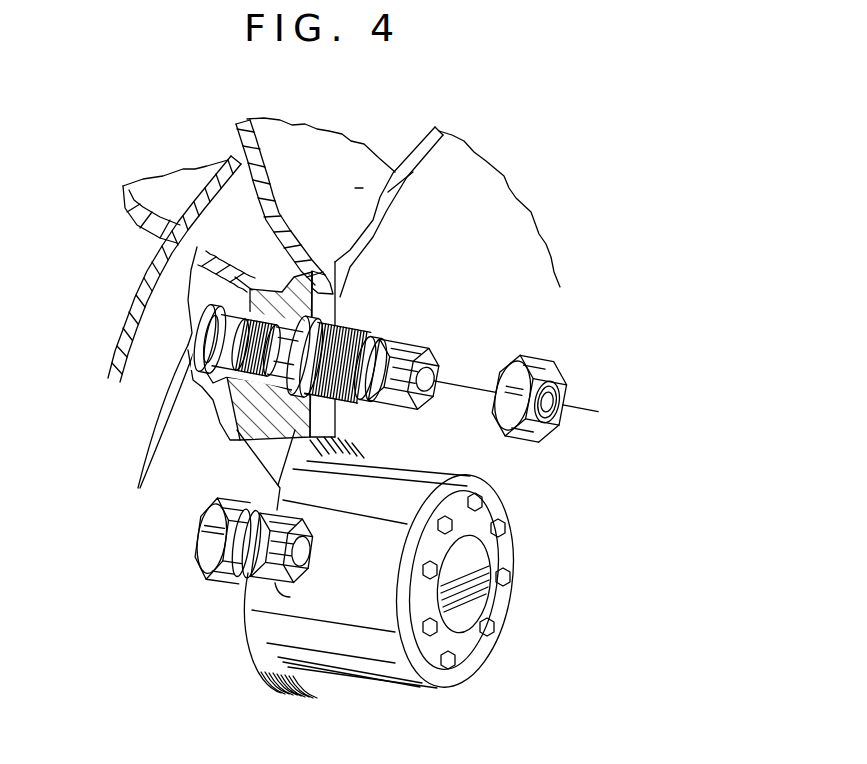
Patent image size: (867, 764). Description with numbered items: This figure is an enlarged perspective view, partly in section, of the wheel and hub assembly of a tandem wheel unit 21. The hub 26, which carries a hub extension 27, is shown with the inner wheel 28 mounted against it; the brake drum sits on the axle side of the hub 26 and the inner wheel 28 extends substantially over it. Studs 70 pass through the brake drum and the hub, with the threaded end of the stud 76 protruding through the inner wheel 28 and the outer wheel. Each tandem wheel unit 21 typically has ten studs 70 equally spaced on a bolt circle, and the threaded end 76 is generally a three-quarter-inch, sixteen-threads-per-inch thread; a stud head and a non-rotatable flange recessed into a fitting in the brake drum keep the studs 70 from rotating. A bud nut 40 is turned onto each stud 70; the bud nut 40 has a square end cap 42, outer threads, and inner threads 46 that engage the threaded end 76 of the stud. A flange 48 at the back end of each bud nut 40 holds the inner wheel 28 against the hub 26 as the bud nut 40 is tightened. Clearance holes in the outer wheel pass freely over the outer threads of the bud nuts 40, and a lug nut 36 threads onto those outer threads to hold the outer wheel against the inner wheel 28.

The tandem wheel unit 21 is at (90, 427).
The hub 26 is at (241, 440).
The hub extension 27 is at (368, 660).
The inner wheel 28 is at (323, 135).
The lug nut 36 is at (193, 542).
The right bud nut 40 is at (383, 338).
The square end cap 42 is at (433, 353).
The inner threads 46 is at (369, 345).
The flange 48 is at (338, 328).
The stud 70 is at (198, 384).
The threaded end of the stud 76 is at (426, 299).